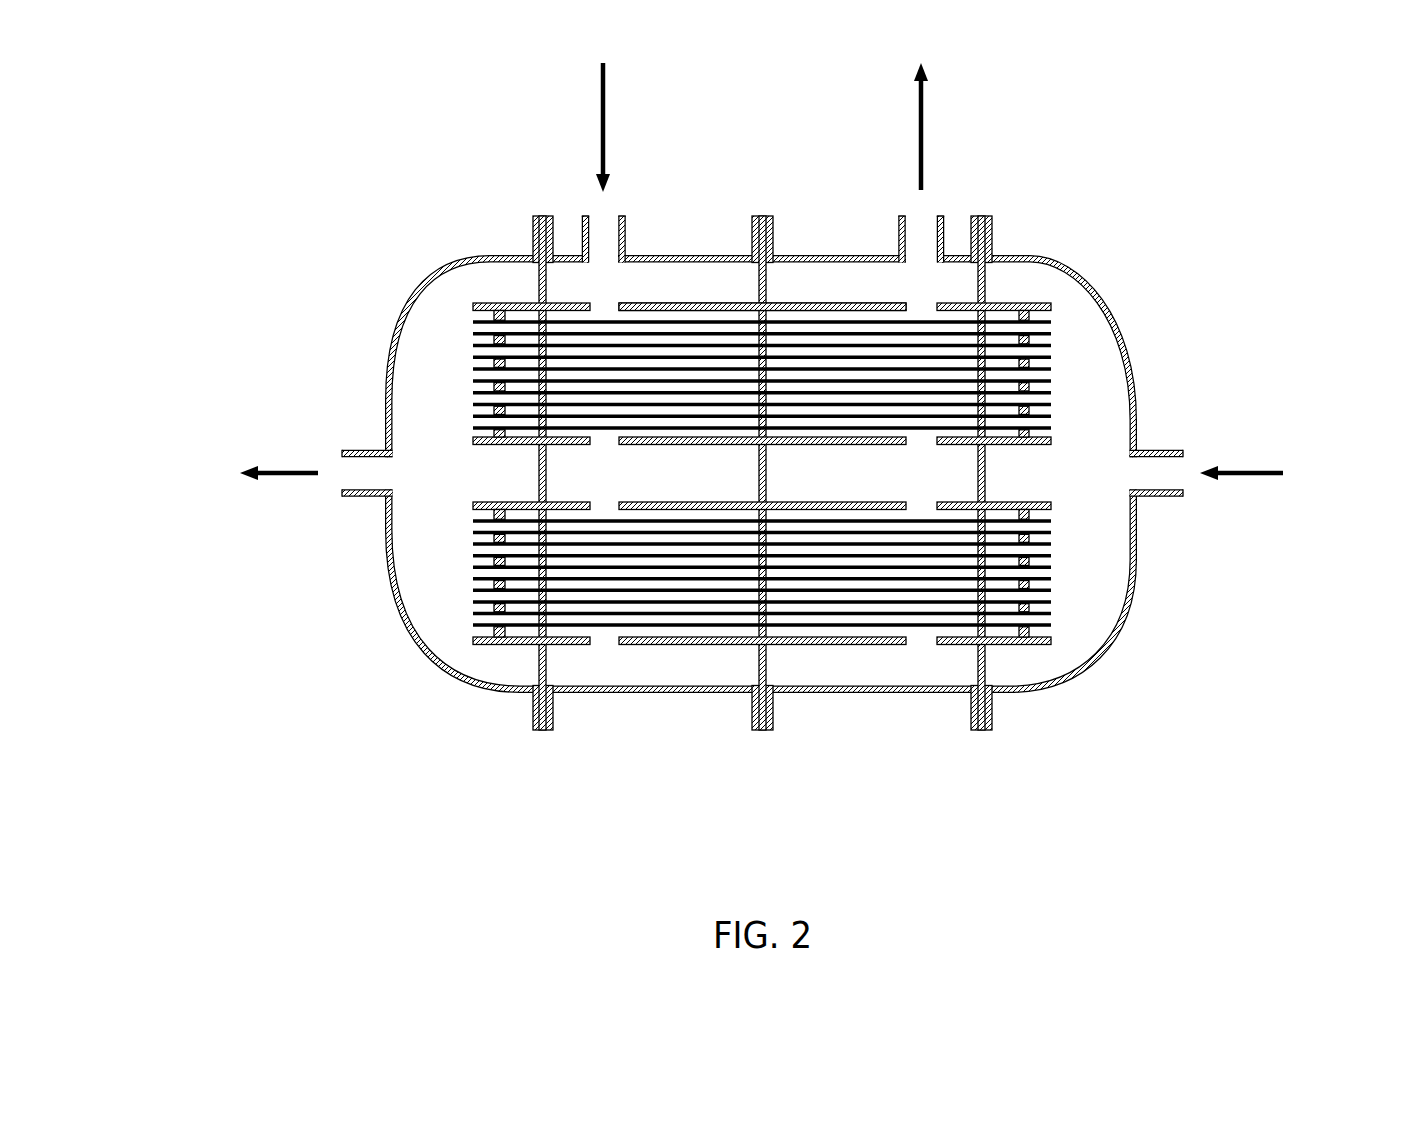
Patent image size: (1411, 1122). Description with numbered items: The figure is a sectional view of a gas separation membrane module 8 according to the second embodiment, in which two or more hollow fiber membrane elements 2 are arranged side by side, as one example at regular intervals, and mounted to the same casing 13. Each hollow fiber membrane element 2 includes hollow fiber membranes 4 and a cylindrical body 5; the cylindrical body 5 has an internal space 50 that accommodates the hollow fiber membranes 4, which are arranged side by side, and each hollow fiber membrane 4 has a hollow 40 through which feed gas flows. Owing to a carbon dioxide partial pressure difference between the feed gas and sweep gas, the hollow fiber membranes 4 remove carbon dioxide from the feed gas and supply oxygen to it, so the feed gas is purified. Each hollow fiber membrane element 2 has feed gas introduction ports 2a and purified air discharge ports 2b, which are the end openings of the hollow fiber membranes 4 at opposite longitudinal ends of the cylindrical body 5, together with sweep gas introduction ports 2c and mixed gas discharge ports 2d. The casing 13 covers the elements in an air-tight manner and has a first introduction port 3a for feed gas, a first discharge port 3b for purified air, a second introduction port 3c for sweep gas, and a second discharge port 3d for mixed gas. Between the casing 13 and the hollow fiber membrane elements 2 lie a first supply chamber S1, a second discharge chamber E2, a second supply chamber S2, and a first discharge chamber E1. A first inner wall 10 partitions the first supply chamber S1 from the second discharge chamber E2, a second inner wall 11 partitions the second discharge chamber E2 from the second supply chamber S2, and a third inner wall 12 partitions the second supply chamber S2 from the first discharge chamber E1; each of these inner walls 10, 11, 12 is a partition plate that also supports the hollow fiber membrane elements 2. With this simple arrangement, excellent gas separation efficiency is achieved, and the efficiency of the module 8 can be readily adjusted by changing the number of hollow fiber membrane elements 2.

The hollow fiber membrane element 2 is at (763, 289).
The feed gas introduction port 2a is at (1048, 353).
The purified air discharge port 2b is at (475, 327).
The sweep gas introduction port 2c is at (618, 302).
The mixed gas discharge port 2d is at (906, 302).
The first introduction port 3a is at (1183, 493).
The first discharge port 3b is at (342, 493).
The second introduction port 3c is at (622, 216).
The second discharge port 3d is at (902, 216).
The hollow fiber membrane 4 is at (606, 622).
The hollow 40 is at (644, 618).
The cylindrical body 5 is at (827, 644).
The internal space 50 is at (858, 628).
The gas separation membrane module 8 is at (732, 451).
The first inner wall 10 is at (980, 730).
The second inner wall 11 is at (760, 730).
The third inner wall 12 is at (542, 730).
The casing 13 is at (1118, 320).
The first discharge chamber E1 is at (442, 618).
The second discharge chamber E2 is at (903, 672).
The first supply chamber S1 is at (1100, 592).
The second supply chamber S2 is at (686, 670).